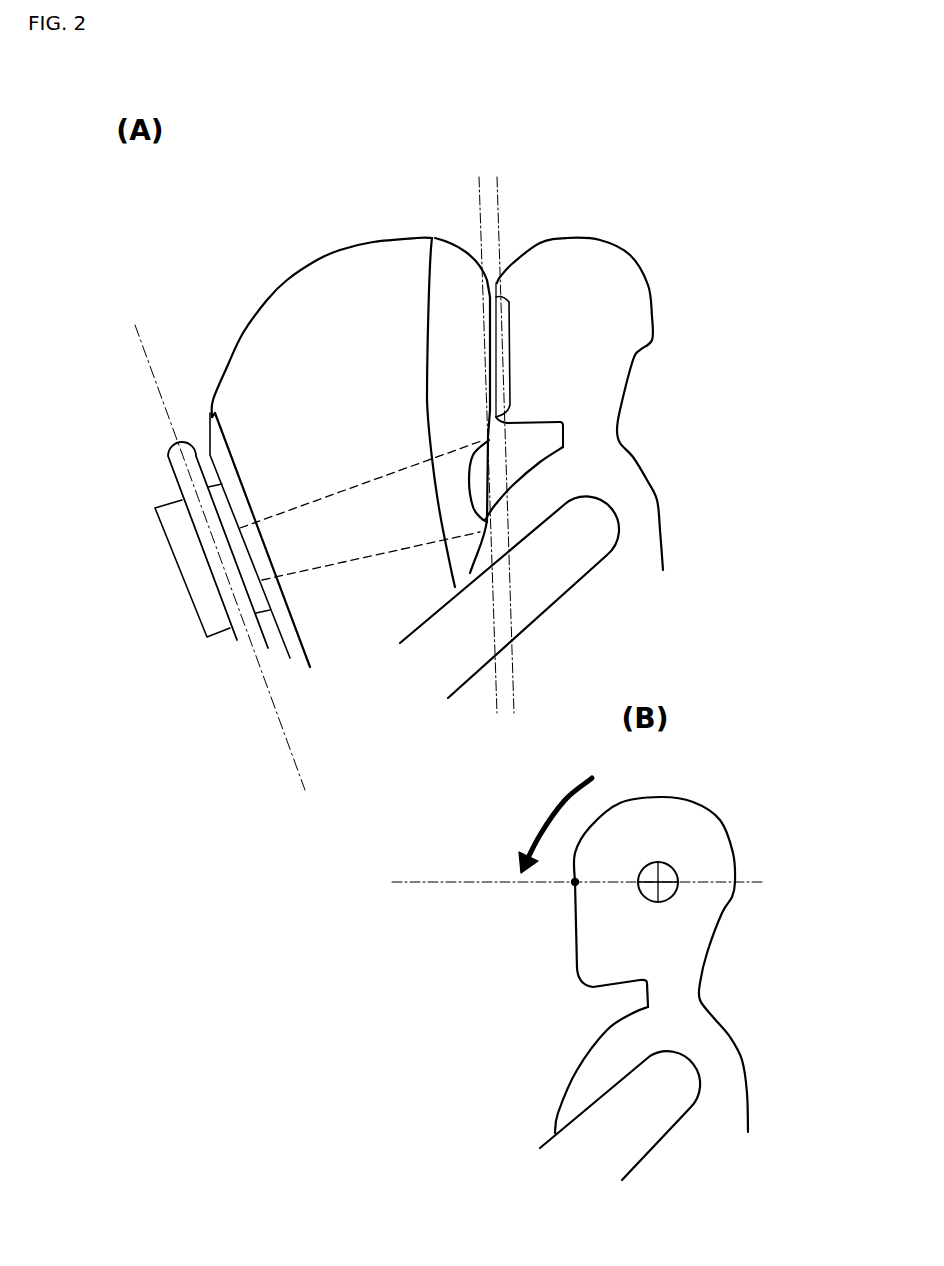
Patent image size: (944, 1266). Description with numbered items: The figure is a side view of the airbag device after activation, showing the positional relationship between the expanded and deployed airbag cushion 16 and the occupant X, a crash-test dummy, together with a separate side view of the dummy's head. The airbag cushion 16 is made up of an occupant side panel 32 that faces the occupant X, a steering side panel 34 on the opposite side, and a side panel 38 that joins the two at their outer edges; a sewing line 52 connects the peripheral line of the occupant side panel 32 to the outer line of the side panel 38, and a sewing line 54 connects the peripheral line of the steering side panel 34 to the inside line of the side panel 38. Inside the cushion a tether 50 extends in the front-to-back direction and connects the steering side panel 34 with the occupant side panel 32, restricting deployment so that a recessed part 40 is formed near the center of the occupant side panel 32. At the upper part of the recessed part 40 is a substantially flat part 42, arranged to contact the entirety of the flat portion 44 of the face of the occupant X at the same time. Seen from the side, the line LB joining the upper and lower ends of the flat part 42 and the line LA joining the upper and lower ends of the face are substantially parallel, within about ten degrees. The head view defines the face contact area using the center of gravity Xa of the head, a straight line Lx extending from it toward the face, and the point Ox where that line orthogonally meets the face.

The airbag cushion 16 is at (389, 473).
The occupant side panel 32 is at (419, 387).
The steering side panel 34 is at (287, 628).
The side panel 38 is at (250, 333).
The recessed part 40 is at (477, 479).
The flat part 42 is at (497, 281).
The flat portion of the face 44 is at (510, 297).
The tether 50 is at (330, 567).
The sewing line 52 is at (428, 297).
The sewing line 54 is at (229, 450).
The occupant X is at (579, 676).
The line LA is at (497, 177).
The line LB is at (478, 178).
The straight line Lx is at (565, 883).
The point Ox is at (575, 882).
The center of gravity of the head Xa is at (662, 887).